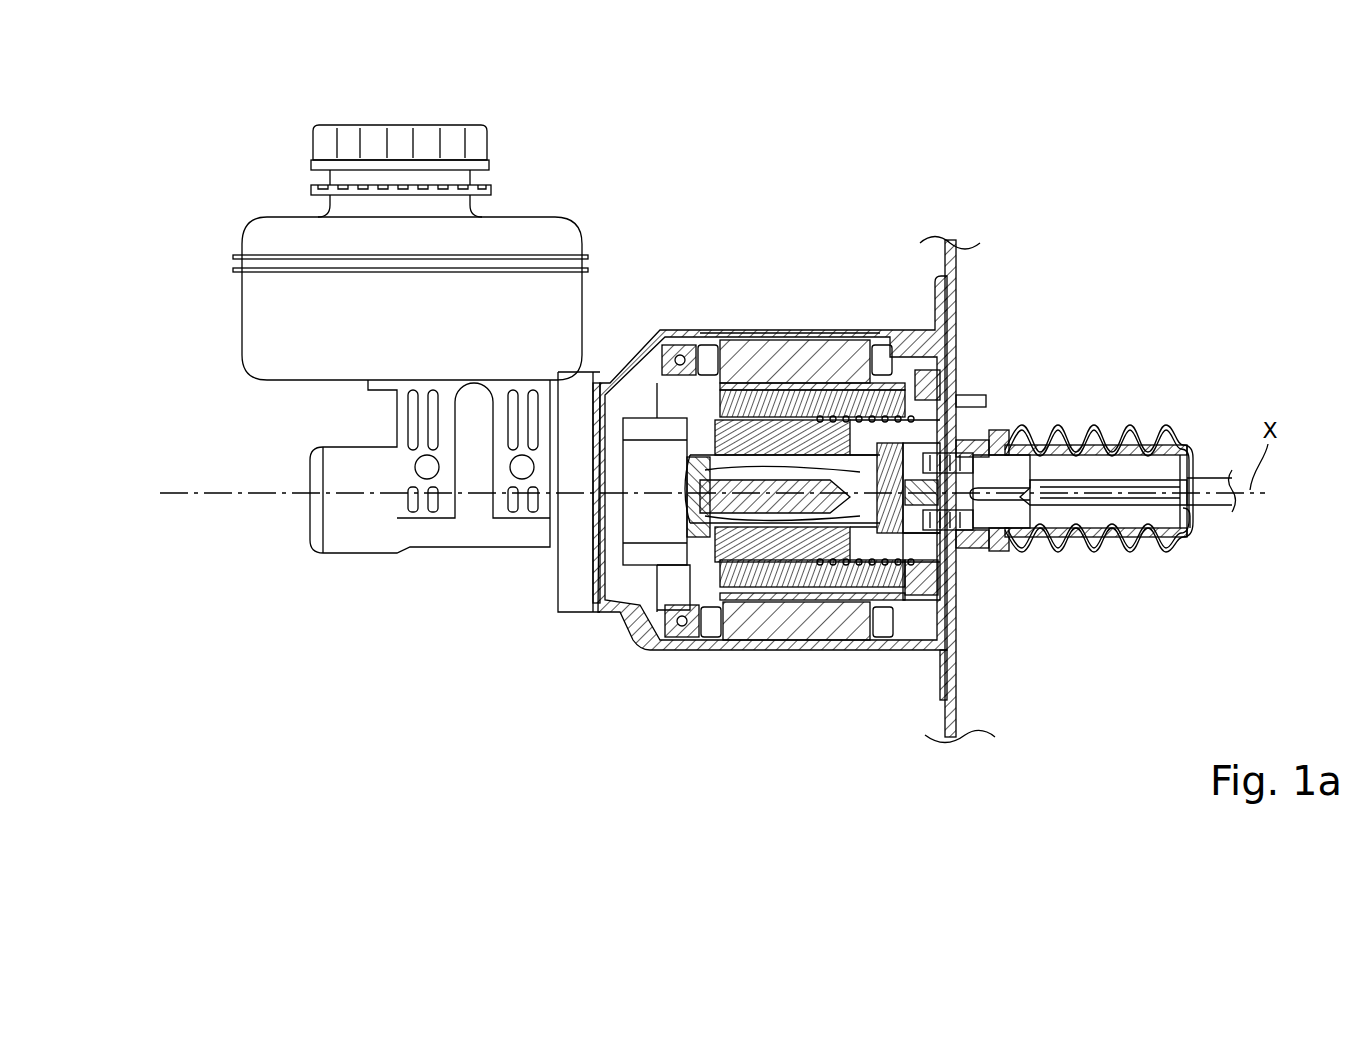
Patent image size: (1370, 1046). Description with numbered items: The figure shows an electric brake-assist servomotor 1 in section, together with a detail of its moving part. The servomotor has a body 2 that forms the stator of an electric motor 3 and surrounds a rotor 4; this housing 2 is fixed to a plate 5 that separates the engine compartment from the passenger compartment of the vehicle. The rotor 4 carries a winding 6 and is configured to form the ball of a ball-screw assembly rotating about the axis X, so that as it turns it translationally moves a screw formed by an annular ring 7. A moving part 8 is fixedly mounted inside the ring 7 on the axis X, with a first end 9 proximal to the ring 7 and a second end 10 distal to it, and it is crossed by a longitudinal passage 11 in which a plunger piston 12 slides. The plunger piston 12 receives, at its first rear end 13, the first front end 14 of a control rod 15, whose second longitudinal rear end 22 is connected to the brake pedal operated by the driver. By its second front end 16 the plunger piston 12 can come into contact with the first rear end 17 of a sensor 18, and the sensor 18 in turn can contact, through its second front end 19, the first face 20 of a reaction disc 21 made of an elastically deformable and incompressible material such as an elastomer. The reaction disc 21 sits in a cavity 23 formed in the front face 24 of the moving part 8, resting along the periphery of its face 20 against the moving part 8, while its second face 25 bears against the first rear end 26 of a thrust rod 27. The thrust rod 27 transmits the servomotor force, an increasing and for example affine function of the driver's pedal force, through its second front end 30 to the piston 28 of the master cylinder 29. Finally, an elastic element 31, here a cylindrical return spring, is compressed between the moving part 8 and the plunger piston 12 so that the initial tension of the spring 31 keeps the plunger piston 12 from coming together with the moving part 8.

The electric brake-assist servomotor 1 is at (712, 379).
The body 2 is at (692, 330).
The electric motor 3 is at (790, 328).
The rotor 4 is at (786, 650).
The plate 5 is at (957, 262).
The winding 6 is at (750, 342).
The annular ring 7 is at (948, 380).
The moving part 8 is at (1137, 437).
The first end 9 is at (830, 600).
The second end 10 is at (1160, 550).
The longitudinal passage 11 is at (1192, 516).
The plunger piston 12 is at (990, 517).
The first rear end 13 is at (1010, 440).
The first front end 14 is at (1032, 486).
The control rod 15 is at (1130, 483).
The second front end 16 is at (968, 560).
The first rear end 17 is at (963, 470).
The sensor 18 is at (692, 487).
The second front end 19 is at (900, 600).
The first face 20 is at (958, 400).
The reaction disc 21 is at (828, 590).
The second longitudinal rear end 22 is at (1205, 485).
The cavity 23 is at (845, 422).
The front face 24 is at (858, 445).
The second face 25 is at (822, 400).
The first rear end 26 is at (860, 562).
The thrust rod 27 is at (700, 470).
The piston 28 is at (690, 495).
The master cylinder 29 is at (398, 553).
The second front end 30 is at (690, 505).
The elastic element 31 is at (990, 550).